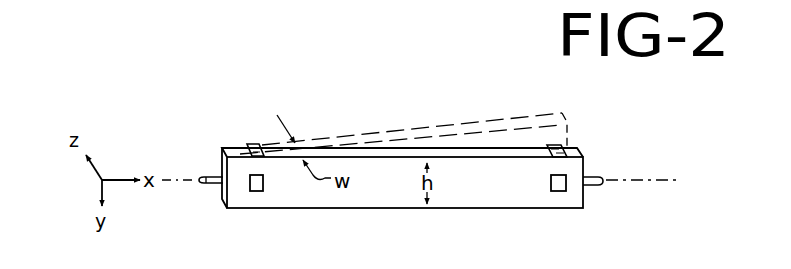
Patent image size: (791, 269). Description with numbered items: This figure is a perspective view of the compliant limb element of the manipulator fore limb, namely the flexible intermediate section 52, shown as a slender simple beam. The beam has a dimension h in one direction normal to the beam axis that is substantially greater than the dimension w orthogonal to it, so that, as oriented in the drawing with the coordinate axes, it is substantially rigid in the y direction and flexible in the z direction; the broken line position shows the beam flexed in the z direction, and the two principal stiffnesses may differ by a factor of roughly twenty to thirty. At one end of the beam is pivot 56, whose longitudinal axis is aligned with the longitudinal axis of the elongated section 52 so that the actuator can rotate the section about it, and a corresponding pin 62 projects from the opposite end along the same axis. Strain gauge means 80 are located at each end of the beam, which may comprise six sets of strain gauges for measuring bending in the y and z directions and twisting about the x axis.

The intermediate section 52 is at (376, 208).
The pivot 56 is at (203, 186).
The pivot pin 62 is at (602, 178).
The strain gauge means 80 is at (250, 177).